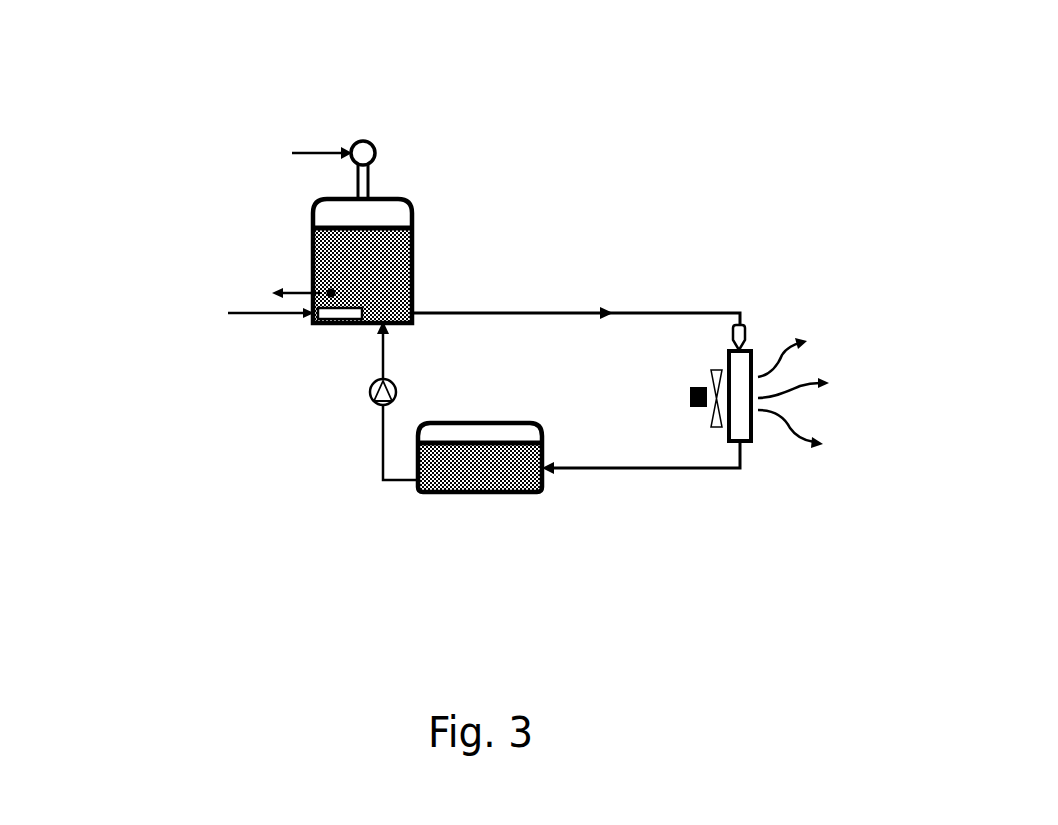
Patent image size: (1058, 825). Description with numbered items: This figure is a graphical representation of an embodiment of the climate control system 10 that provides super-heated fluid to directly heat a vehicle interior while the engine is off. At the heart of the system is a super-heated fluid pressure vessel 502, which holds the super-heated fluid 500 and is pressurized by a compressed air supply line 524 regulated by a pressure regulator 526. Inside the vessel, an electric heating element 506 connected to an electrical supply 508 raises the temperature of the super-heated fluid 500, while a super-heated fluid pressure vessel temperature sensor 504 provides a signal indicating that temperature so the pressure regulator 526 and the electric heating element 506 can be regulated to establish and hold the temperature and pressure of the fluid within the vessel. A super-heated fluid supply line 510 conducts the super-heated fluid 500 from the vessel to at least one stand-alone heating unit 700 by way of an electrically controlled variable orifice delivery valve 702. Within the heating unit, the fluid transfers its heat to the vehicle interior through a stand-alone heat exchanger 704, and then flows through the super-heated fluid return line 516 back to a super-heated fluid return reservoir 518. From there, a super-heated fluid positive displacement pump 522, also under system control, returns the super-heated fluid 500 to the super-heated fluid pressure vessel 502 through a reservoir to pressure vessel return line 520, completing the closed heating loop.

The climate control system 10 is at (108, 95).
The super-heated fluid 500 is at (398, 258).
The super-heated fluid pressure vessel 502 is at (400, 205).
The super-heated fluid pressure vessel temperature sensor 504 is at (330, 292).
The electric heating element 506 is at (325, 323).
The electrical supply 508 is at (243, 316).
The super-heated fluid supply line 510 is at (563, 313).
The super-heated fluid return line 516 is at (638, 468).
The super-heated fluid return reservoir 518 is at (478, 492).
The reservoir to pressure vessel return line 520 is at (383, 353).
The super-heated fluid positive displacement pump 522 is at (371, 402).
The compressed air supply line 524 is at (318, 152).
The pressure regulator 526 is at (368, 141).
The stand-alone heating unit 700 is at (838, 352).
The electrically controlled variable orifice delivery valve 702 is at (747, 335).
The stand-alone heat exchanger 704 is at (752, 440).